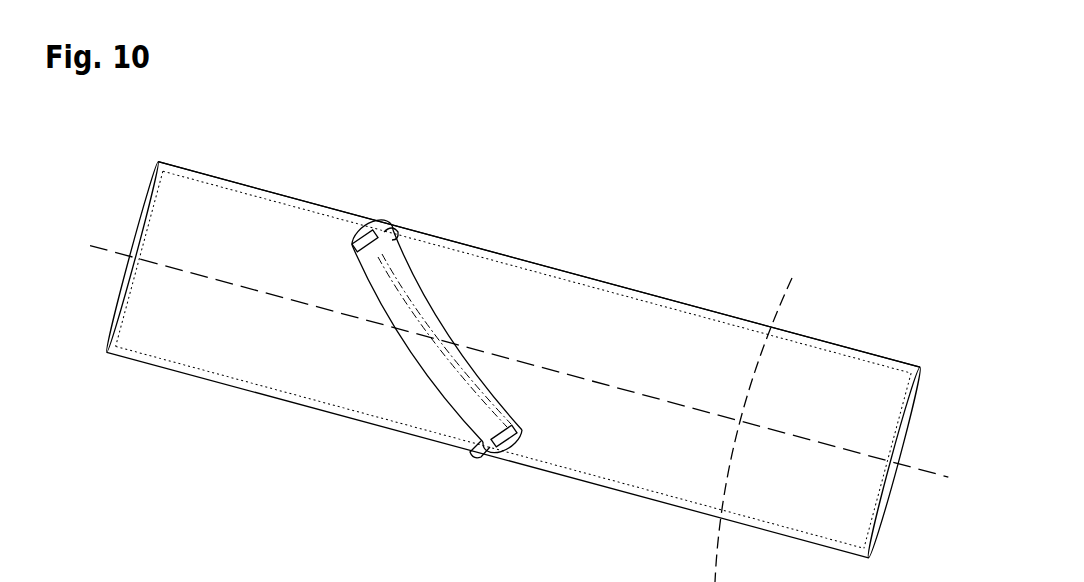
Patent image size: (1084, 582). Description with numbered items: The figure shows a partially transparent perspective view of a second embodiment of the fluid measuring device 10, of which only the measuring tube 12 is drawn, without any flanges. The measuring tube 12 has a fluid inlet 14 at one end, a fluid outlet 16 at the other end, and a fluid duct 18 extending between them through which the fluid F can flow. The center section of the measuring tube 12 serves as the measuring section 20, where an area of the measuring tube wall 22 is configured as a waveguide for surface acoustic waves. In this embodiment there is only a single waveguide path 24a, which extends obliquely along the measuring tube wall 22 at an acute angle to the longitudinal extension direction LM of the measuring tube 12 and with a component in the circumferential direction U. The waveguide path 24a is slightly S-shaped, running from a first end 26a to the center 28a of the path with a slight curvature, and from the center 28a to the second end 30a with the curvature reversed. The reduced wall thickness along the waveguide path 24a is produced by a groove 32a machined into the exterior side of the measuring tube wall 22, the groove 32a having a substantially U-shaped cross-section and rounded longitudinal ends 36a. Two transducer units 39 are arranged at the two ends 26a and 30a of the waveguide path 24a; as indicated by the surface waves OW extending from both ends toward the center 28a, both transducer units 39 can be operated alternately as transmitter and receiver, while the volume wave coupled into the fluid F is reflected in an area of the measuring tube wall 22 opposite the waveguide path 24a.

The fluid measuring device 10 is at (812, 206).
The measuring tube 12 is at (838, 348).
The fluid inlet 14 is at (120, 280).
The fluid outlet 16 is at (893, 497).
The fluid duct 18 is at (692, 386).
The measuring section 20 is at (510, 254).
The measuring tube wall 22 is at (575, 275).
The waveguide path 24a is at (432, 383).
The first end of the waveguide path 26a is at (353, 232).
The center of the waveguide path 28a is at (408, 338).
The second end of the waveguide path 30a is at (494, 450).
The groove 32a is at (527, 443).
The rounded longitudinal end 36a is at (360, 234).
The transducer unit 39 is at (388, 235).
The surface acoustic waves OW is at (417, 307).
The fluid F is at (711, 476).
The circumferential direction U is at (714, 556).
The longitudinal extension direction LM is at (927, 470).